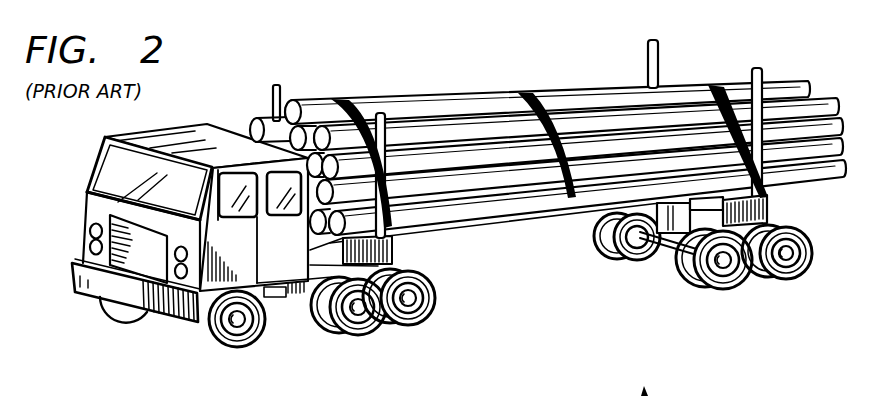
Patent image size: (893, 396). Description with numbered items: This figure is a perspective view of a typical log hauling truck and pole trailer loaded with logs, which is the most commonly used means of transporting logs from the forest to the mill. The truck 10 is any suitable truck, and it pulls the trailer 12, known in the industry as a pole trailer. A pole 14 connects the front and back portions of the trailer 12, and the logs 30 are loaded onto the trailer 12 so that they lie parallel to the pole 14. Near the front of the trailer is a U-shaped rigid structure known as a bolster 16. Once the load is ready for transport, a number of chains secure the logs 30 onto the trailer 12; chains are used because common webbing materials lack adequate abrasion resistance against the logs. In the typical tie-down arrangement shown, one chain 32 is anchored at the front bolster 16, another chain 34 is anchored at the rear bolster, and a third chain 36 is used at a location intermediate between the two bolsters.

The truck 10 is at (92, 166).
The trailer 12 is at (521, 46).
The pole 14 is at (529, 228).
The bolster 16 is at (325, 74).
The logs 30 is at (420, 98).
The chain 32 is at (340, 99).
The chain 34 is at (722, 83).
The third chain 36 is at (528, 93).